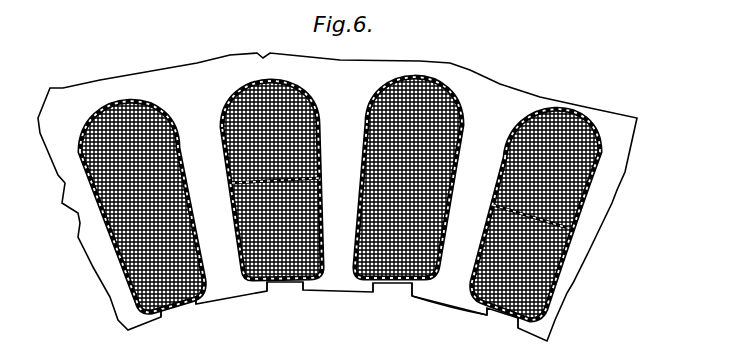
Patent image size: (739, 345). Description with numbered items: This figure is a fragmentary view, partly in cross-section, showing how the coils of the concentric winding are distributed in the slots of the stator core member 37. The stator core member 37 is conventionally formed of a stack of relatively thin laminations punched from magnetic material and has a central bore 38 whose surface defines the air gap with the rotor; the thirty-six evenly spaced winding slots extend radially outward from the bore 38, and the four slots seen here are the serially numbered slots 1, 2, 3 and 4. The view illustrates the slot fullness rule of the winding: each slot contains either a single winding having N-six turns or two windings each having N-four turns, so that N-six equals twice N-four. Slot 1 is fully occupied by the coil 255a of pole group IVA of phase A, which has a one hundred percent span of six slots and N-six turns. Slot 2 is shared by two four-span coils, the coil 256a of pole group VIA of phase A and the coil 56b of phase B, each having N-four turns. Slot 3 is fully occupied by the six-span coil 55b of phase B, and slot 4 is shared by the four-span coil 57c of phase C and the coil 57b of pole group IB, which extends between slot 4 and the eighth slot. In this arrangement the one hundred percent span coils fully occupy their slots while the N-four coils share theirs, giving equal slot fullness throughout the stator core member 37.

The winding slot 1 is at (178, 311).
The winding slot 2 is at (285, 293).
The winding slot 3 is at (392, 294).
The winding slot 4 is at (502, 320).
The stator core member 37 is at (566, 93).
The bore 38 is at (448, 306).
The coil 55b is at (457, 113).
The coil 56b is at (272, 247).
The coil 57b is at (553, 256).
The coil 57c is at (597, 148).
The coil 255a is at (133, 228).
The coil 256a is at (281, 113).